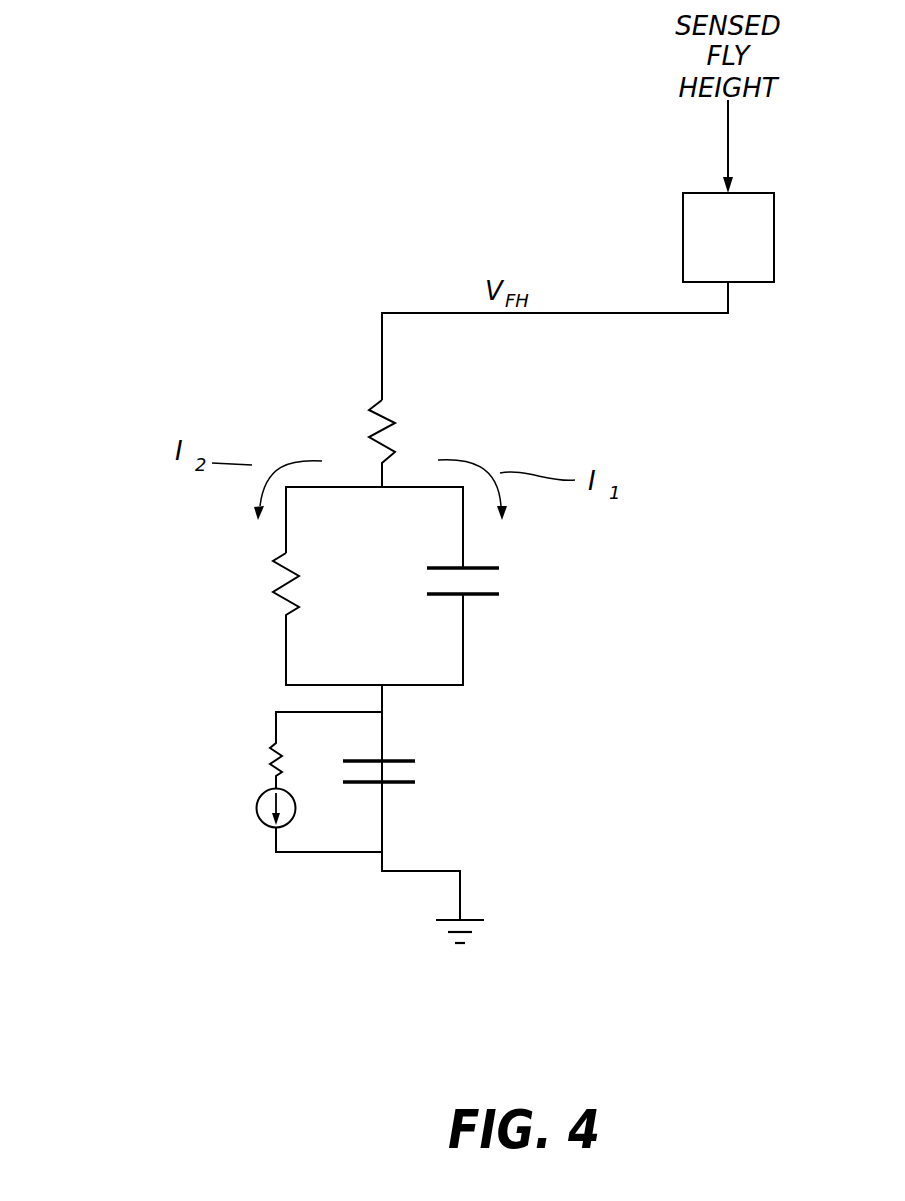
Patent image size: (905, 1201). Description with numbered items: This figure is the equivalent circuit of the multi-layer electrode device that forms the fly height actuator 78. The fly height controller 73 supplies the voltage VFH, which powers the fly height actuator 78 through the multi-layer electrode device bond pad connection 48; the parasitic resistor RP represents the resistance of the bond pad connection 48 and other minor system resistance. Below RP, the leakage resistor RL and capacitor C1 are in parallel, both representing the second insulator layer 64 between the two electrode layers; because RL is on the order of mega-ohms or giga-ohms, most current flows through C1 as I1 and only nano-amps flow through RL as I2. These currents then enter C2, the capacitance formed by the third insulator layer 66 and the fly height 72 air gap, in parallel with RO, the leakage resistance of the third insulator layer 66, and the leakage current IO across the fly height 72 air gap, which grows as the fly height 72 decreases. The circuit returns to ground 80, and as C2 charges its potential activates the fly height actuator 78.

The fly height actuator 78 is at (260, 300).
The fly height controller 73 is at (745, 259).
The multi-layer electrode device bond pad connection 48 is at (484, 428).
The second insulator layer 64 is at (571, 578).
The third insulator layer 66 is at (210, 770).
The fly height 72 is at (521, 782).
The ground 80 is at (497, 946).